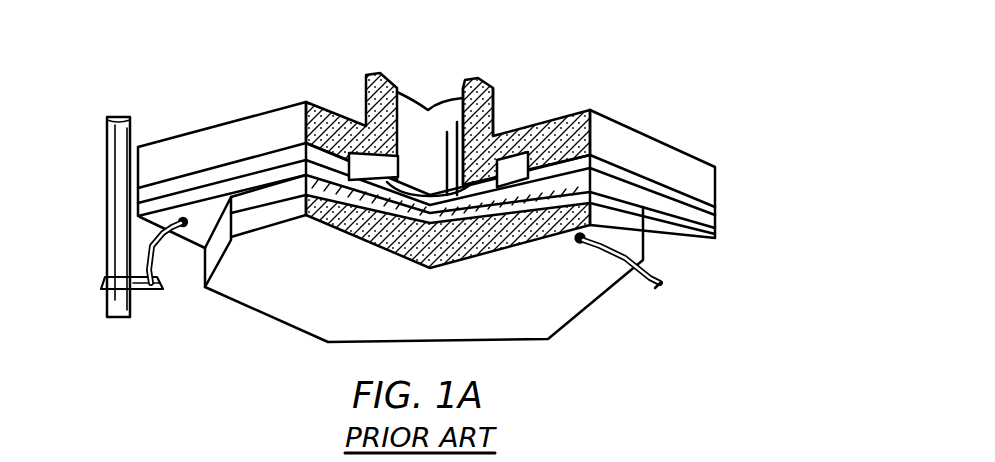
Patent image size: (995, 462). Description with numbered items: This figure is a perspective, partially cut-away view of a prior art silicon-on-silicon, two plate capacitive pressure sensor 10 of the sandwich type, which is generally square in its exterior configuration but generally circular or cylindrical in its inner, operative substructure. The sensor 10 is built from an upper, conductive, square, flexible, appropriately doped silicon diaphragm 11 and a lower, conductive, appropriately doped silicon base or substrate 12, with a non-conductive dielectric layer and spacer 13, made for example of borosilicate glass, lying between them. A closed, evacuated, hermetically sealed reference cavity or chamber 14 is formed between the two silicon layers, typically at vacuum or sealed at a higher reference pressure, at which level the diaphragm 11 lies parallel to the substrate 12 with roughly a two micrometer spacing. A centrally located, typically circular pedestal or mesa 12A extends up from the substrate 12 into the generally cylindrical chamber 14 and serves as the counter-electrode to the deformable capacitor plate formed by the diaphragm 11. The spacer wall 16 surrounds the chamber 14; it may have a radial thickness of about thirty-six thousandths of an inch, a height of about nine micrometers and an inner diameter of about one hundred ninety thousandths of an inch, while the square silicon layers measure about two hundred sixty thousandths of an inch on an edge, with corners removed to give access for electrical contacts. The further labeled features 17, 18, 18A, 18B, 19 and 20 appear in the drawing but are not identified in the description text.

The pressure sensor 10 is at (685, 38).
The silicon diaphragm 11 is at (720, 228).
The silicon base 12 is at (562, 334).
The mesa 12A is at (512, 236).
The dielectric layer and spacer 13 is at (553, 118).
The reference cavity 14 is at (452, 184).
The spacer wall 16 is at (643, 207).
The plated wall of through hole 17 is at (493, 128).
The upper conductive plate 18 is at (707, 160).
The left terminal pin with lead wire 18A is at (107, 250).
The right lead wire 18B is at (647, 288).
The through hole aperture 19 is at (430, 108).
The dielectric layer 20 is at (720, 212).